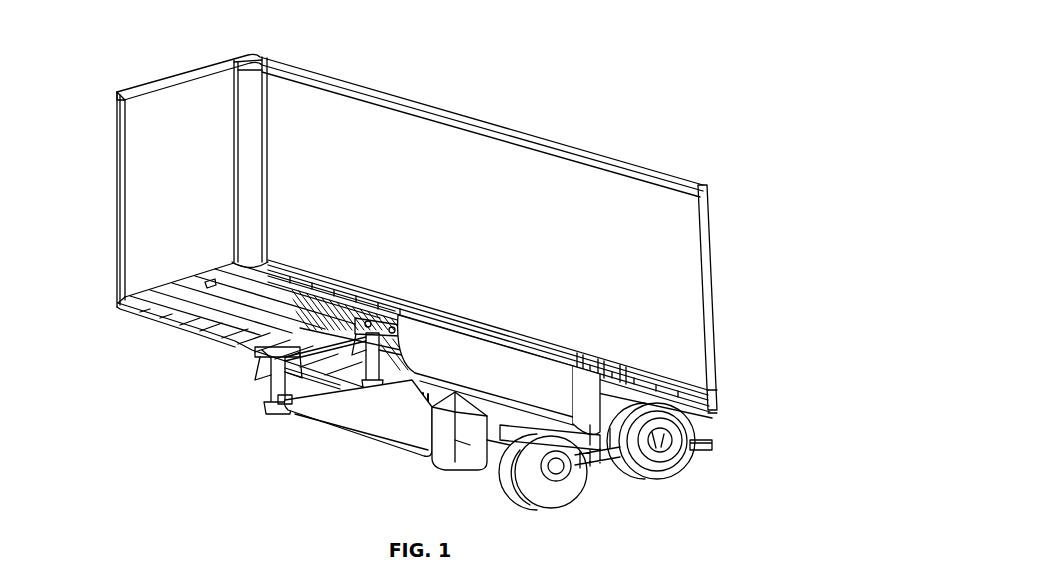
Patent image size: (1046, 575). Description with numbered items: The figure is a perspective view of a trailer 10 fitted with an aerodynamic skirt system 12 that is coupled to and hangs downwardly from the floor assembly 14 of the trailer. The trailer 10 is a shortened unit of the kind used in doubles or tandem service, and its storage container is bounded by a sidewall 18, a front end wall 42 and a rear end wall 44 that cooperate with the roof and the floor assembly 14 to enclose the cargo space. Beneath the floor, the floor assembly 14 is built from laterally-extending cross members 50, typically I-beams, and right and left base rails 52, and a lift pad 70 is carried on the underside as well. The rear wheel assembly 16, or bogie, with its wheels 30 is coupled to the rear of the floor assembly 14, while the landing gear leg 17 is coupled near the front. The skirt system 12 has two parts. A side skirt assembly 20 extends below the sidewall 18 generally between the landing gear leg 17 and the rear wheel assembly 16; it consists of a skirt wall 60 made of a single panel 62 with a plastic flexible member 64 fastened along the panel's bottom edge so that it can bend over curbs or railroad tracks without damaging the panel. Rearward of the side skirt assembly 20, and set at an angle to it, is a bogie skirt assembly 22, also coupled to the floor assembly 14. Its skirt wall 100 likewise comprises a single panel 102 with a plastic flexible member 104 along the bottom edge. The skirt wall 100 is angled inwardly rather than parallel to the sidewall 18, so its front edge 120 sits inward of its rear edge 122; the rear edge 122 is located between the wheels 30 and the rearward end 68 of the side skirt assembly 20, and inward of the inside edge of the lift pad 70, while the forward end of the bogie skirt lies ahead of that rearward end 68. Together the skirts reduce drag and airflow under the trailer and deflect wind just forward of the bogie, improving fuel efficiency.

The trailer 10 is at (645, 41).
The aerodynamic skirt system 12 is at (277, 486).
The floor assembly 14 is at (203, 326).
The rear wheel assembly 16 is at (609, 487).
The landing gear leg 17 is at (270, 398).
The sidewall 18 is at (590, 195).
The side skirt assembly 20 is at (420, 352).
The bogie skirt assembly 22 is at (483, 485).
The wheels 30 is at (564, 514).
The front end wall 42 is at (160, 153).
The rear end wall 44 is at (710, 252).
The cross members 50 is at (647, 380).
The base rails 52 is at (707, 380).
The skirt wall 60 is at (470, 355).
The panel 62 is at (432, 340).
The flexible member 64 is at (480, 393).
The rearward end 68 is at (453, 474).
The lift pad 70 is at (593, 373).
The skirt wall 100 is at (458, 465).
The panel 102 is at (622, 372).
The flexible member 104 is at (473, 462).
The front edge 120 is at (438, 418).
The rear edge 122 is at (510, 437).